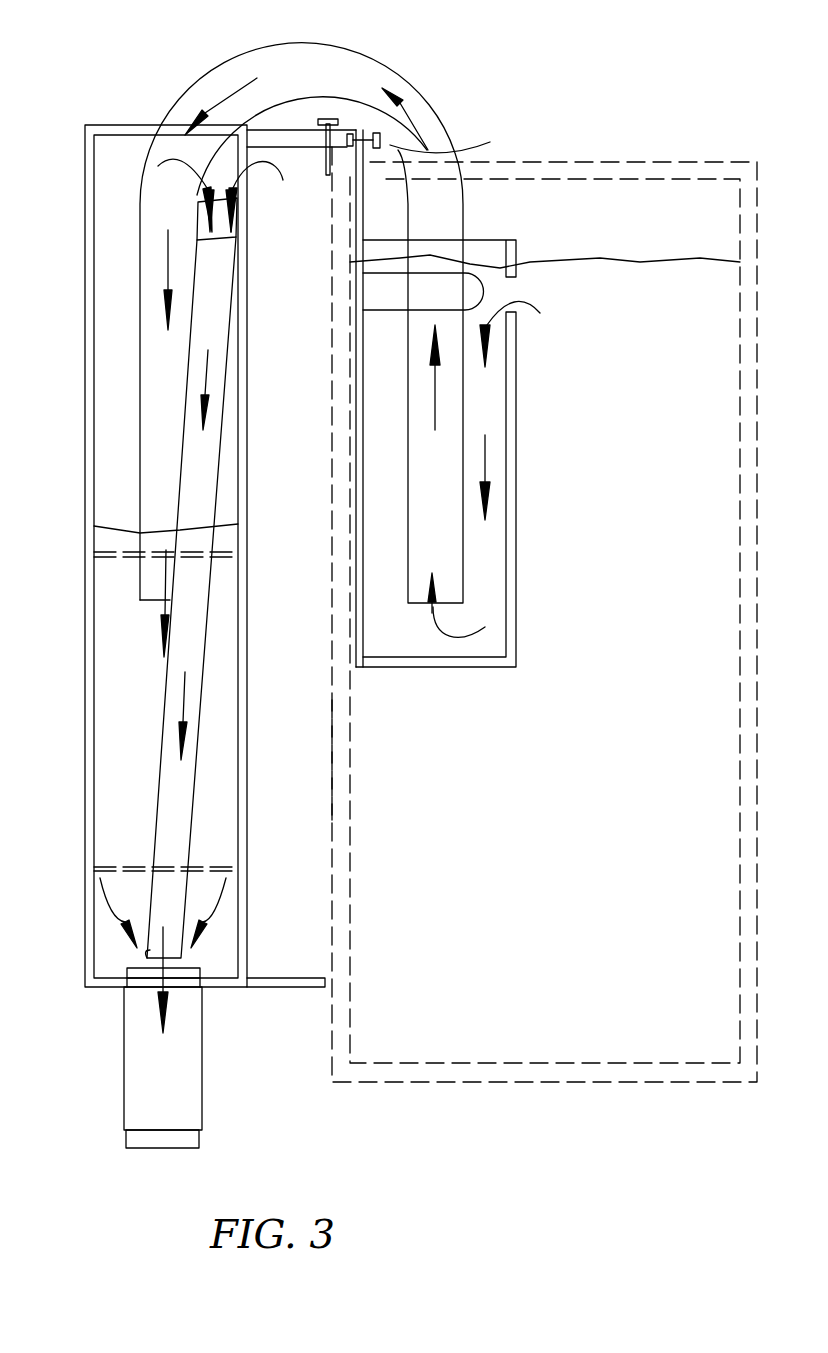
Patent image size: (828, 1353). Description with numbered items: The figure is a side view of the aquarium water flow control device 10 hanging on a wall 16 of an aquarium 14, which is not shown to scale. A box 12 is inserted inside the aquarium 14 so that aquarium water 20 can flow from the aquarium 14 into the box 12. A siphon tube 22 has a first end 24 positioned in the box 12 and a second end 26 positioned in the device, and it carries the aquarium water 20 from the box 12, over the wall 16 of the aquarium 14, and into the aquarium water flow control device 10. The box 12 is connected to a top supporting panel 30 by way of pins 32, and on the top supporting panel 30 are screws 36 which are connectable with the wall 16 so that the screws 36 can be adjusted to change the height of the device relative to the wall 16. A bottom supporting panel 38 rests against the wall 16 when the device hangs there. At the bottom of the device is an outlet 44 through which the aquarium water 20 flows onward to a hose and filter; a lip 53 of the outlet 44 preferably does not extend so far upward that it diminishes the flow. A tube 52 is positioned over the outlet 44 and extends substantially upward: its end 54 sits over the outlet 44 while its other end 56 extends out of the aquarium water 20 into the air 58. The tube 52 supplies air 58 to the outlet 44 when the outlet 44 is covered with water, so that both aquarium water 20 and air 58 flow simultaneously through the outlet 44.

The aquarium water flow control device 10 is at (150, 66).
The box 12 is at (457, 690).
The aquarium 14 is at (583, 1060).
The wall 16 is at (328, 762).
The aquarium water 20 is at (647, 280).
The siphon tube 22 is at (382, 80).
The first end 24 is at (423, 607).
The second end 26 is at (148, 603).
The top supporting panel 30 is at (290, 145).
The pin 32 is at (462, 152).
The screw 36 is at (328, 118).
The bottom supporting panel 38 is at (298, 985).
The outlet 44 is at (115, 958).
The tube 52 is at (197, 652).
The lip 53 is at (195, 970).
The end 54 is at (147, 958).
The end 56 is at (228, 192).
The air 58 is at (201, 553).